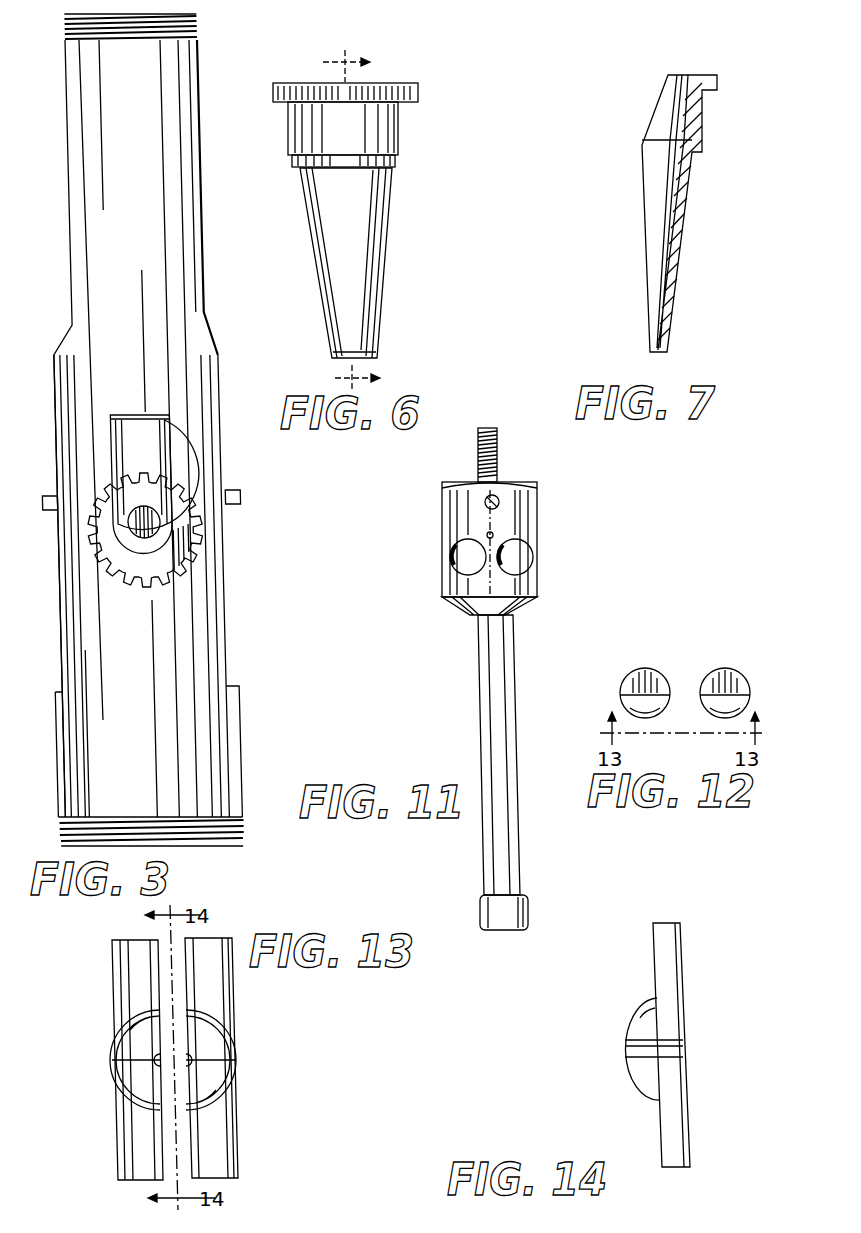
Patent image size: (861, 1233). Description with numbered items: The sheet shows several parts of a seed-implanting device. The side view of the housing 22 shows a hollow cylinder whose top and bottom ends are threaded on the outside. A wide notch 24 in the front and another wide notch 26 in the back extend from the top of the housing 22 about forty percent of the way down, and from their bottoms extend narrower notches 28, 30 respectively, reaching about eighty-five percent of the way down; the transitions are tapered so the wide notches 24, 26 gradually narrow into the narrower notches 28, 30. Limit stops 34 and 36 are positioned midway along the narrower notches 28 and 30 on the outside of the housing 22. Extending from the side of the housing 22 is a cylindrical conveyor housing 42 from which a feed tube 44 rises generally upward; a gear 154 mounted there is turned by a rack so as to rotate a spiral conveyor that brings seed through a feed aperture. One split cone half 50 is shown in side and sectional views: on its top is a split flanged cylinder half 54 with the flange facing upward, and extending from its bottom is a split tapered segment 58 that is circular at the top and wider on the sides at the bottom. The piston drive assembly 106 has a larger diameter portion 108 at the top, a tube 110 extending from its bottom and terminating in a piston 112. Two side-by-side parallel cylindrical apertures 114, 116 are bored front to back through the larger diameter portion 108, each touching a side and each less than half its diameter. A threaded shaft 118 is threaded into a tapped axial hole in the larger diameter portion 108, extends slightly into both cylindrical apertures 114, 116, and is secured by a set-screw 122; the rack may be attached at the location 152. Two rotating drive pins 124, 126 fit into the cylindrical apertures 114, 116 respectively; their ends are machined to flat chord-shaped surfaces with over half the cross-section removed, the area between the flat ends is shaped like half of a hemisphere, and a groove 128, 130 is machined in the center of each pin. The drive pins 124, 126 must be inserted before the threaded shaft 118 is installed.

In FIG. 3, the housing 22 is at (32, 744).
In FIG. 3, the wide notch 24 is at (64, 242).
In FIG. 3, the wide notch 26 is at (197, 206).
In FIG. 3, the narrower notch 28 is at (45, 640).
In FIG. 3, the narrower notch 30 is at (210, 620).
In FIG. 3, the limit stop 34 is at (36, 496).
In FIG. 3, the limit stop 36 is at (226, 490).
In FIG. 3, the conveyor housing 42 is at (104, 576).
In FIG. 3, the feed tube 44 is at (134, 432).
In FIG. 3, the gear 154 is at (146, 582).
In FIG. 6, the split cone half 50 is at (313, 255).
In FIG. 7, the split cone half 50 is at (693, 218).
In FIG. 6, the split flanged cylinder half 54 is at (399, 128).
In FIG. 7, the split flanged cylinder half 54 is at (703, 108).
In FIG. 6, the split tapered segment 58 is at (382, 198).
In FIG. 7, the split tapered segment 58 is at (672, 316).
In FIG. 11, the piston drive assembly 106 is at (473, 633).
In FIG. 11, the larger diameter portion 108 is at (442, 504).
In FIG. 11, the tube 110 is at (515, 683).
In FIG. 11, the piston 112 is at (481, 910).
In FIG. 11, the cylindrical aperture 114 is at (455, 551).
In FIG. 11, the cylindrical aperture 116 is at (527, 552).
In FIG. 11, the threaded shaft 118 is at (478, 450).
In FIG. 11, the set-screw 122 is at (505, 496).
In FIG. 11, the rack attachment location 152 is at (500, 532).
In FIG. 12, the rotating drive pin 124 is at (651, 665).
In FIG. 13, the rotating drive pin 124 is at (104, 1026).
In FIG. 14, the rotating drive pin 124 is at (641, 1101).
In FIG. 12, the rotating drive pin 126 is at (712, 665).
In FIG. 13, the rotating drive pin 126 is at (238, 1022).
In FIG. 13, the groove 128 is at (117, 1062).
In FIG. 14, the groove 128 is at (688, 1048).
In FIG. 13, the groove 130 is at (232, 1074).